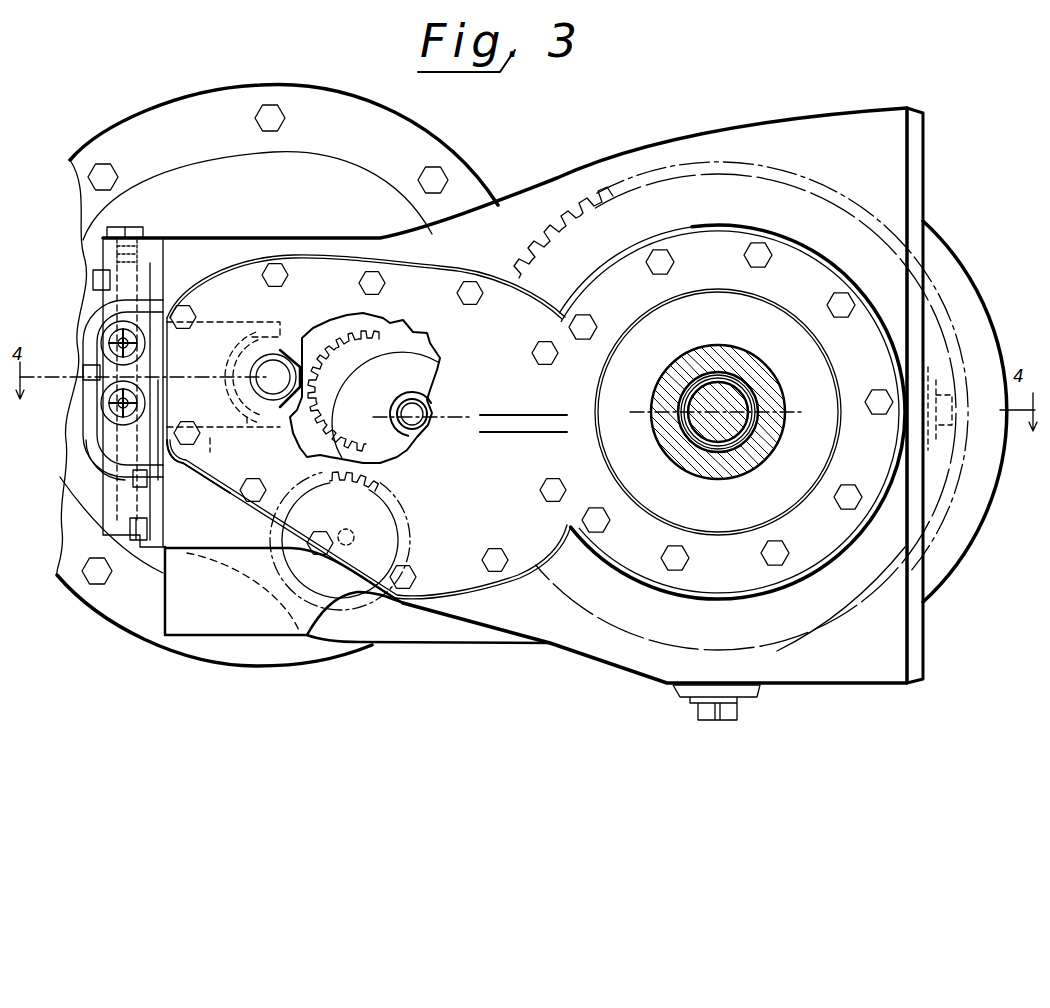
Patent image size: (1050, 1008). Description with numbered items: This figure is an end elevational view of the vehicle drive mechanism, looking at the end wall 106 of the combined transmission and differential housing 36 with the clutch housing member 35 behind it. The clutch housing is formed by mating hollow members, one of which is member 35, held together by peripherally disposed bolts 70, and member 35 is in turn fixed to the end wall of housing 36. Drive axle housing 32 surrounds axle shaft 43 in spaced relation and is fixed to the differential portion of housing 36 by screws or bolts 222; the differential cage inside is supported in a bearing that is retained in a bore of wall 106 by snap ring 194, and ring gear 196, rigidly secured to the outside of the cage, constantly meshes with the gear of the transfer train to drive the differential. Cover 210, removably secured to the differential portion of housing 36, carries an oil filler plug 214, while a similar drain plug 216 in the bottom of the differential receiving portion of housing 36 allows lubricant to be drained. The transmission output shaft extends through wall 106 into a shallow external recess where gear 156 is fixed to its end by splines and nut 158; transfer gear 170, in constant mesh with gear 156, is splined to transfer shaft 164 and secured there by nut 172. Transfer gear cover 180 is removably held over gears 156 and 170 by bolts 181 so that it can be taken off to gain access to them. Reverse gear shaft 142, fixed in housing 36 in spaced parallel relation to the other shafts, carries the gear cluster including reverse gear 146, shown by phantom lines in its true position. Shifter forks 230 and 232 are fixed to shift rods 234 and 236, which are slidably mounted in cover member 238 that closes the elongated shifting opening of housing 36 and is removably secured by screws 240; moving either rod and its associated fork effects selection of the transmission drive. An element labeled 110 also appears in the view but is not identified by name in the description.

The drive axle housing 32 is at (733, 356).
The clutch housing member 35 is at (293, 163).
The transmission and differential housing 36 is at (234, 630).
The axle shaft 43 is at (708, 434).
The bolts 70 is at (107, 169).
The end wall 106 is at (558, 650).
The input shaft 110 is at (303, 388).
The reverse gear shaft 142 is at (347, 535).
The reverse gear 146 is at (383, 487).
The transmission output gear 156 is at (335, 349).
The nut 158 is at (293, 423).
The transfer shaft 164 is at (398, 442).
The transfer gear 170 is at (386, 322).
The nut 172 is at (397, 433).
The transfer gear cover 180 is at (318, 268).
The bolts 181 is at (276, 264).
The snap ring 194 is at (688, 379).
The ring gear 196 is at (572, 228).
The cover 210 is at (958, 512).
The oil filler plug 214 is at (985, 443).
The drain plug 216 is at (750, 712).
The bolts 222 is at (836, 301).
The shifter fork 230 is at (205, 318).
The shifter fork 232 is at (192, 468).
The shift rod 234 is at (120, 343).
The shift rod 236 is at (118, 408).
The cover member 238 is at (78, 458).
The screws 240 is at (128, 530).